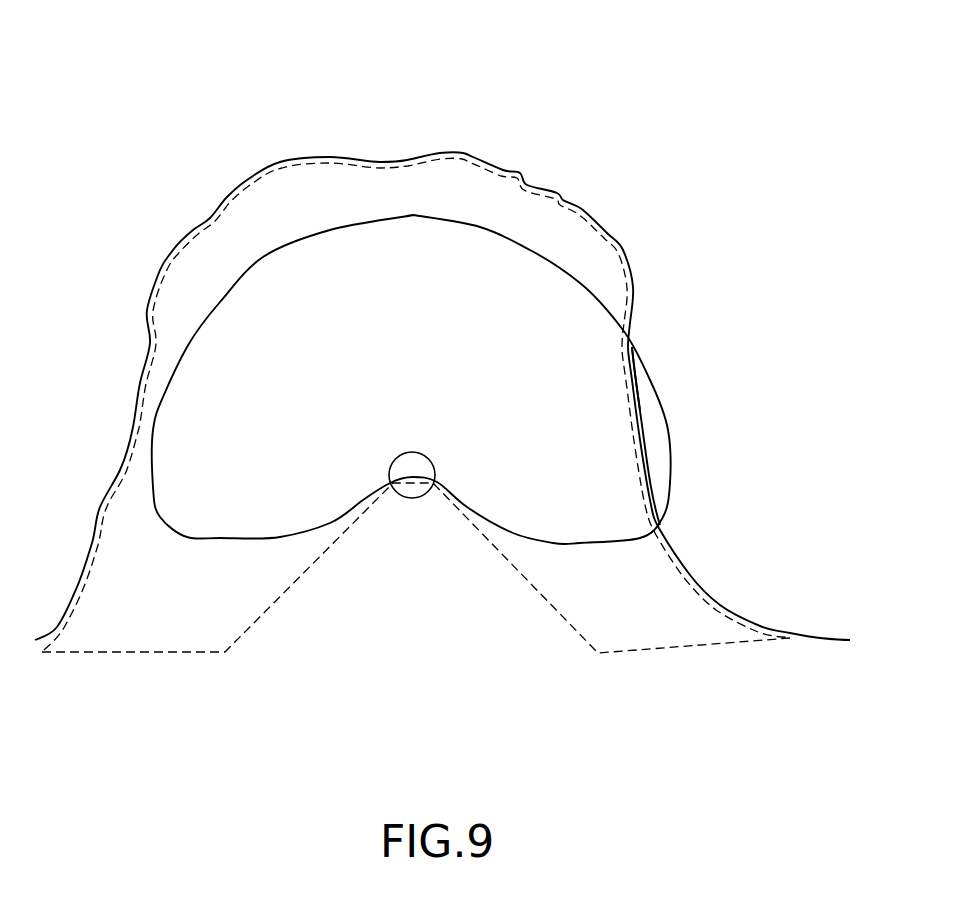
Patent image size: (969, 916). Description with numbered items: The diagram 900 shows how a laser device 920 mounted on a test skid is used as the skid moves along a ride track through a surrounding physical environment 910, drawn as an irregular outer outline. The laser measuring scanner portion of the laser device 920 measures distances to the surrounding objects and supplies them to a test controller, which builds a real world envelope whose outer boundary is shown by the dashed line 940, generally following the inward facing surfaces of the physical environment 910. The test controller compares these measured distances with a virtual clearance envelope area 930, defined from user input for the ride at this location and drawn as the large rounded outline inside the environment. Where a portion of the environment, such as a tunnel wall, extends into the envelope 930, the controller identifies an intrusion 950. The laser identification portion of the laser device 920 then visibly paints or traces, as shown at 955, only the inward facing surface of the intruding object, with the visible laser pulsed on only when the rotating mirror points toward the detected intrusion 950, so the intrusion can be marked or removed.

The diagram 900 is at (212, 80).
The physical environment 910 is at (623, 248).
The laser device 920 is at (423, 498).
The virtual clearance envelope area 930 is at (210, 295).
The outer boundary of real world envelope 940 is at (130, 653).
The intrusion 950 is at (660, 450).
The tracing 955 is at (648, 368).